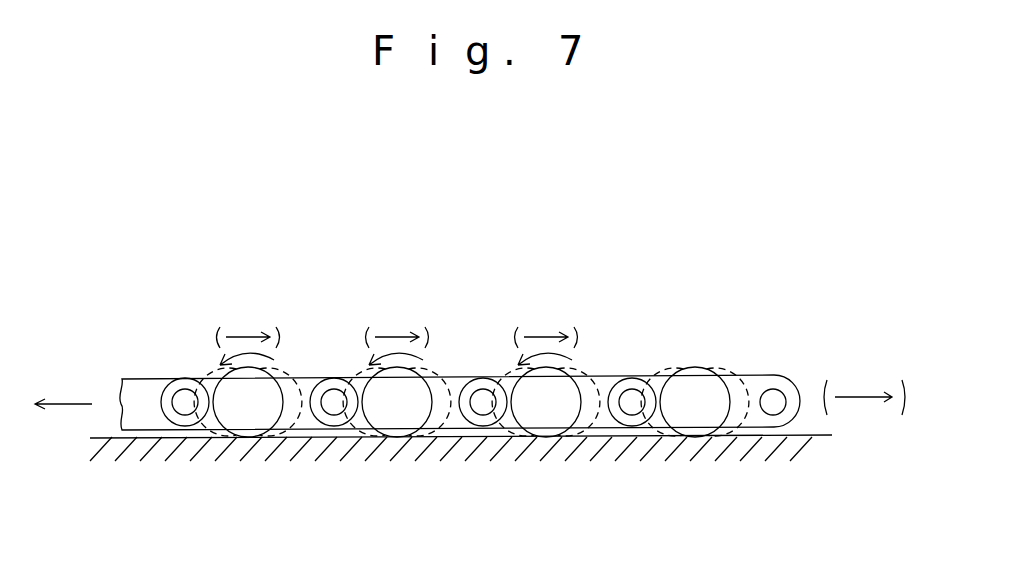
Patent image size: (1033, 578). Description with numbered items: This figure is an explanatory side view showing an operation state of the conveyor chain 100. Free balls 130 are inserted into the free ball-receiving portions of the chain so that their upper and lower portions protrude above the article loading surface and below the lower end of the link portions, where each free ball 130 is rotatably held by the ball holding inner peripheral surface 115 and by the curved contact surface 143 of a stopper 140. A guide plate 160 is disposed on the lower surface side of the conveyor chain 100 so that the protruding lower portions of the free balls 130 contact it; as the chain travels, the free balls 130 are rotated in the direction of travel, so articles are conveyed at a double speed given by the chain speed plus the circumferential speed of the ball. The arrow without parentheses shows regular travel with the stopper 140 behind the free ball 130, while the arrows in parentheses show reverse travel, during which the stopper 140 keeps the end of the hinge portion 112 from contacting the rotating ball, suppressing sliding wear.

The conveyor chain 100 is at (658, 318).
The hinge portion 112 is at (334, 420).
The ball holding inner peripheral surface 115 is at (534, 410).
The free ball 130 is at (235, 400).
The stopper 140 is at (291, 395).
The contact surface 143 is at (420, 398).
The guide plate 160 is at (823, 425).